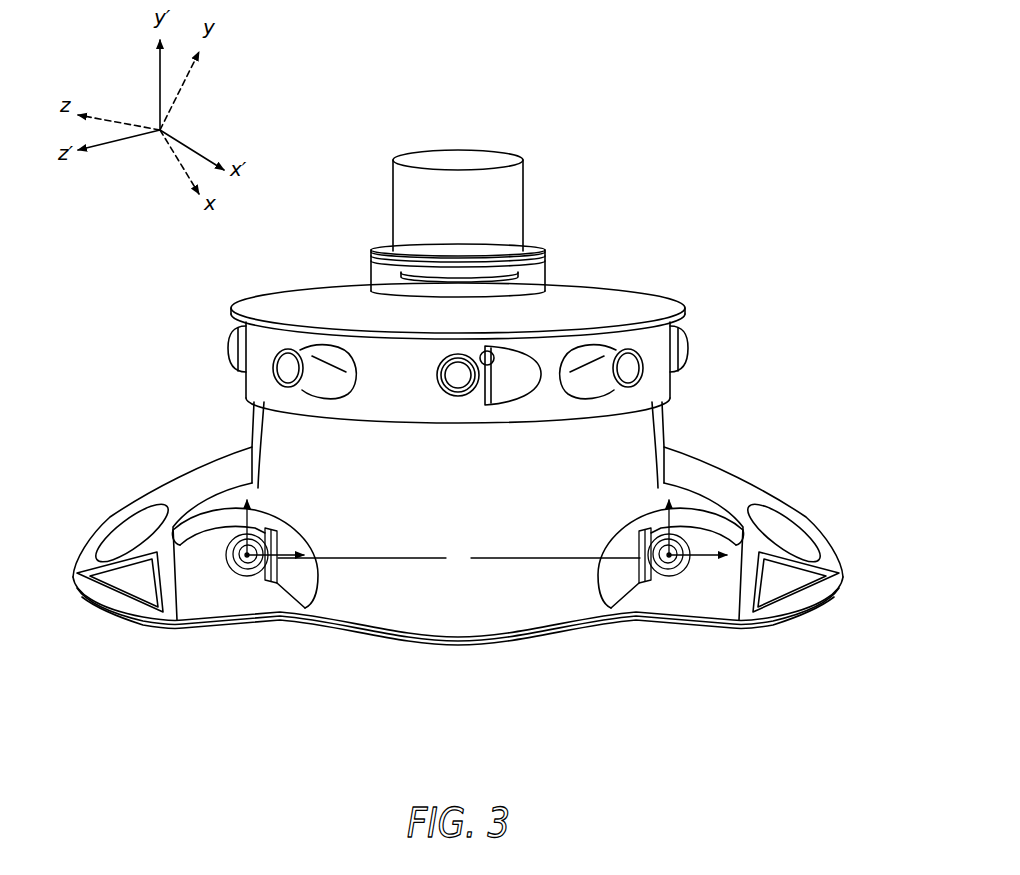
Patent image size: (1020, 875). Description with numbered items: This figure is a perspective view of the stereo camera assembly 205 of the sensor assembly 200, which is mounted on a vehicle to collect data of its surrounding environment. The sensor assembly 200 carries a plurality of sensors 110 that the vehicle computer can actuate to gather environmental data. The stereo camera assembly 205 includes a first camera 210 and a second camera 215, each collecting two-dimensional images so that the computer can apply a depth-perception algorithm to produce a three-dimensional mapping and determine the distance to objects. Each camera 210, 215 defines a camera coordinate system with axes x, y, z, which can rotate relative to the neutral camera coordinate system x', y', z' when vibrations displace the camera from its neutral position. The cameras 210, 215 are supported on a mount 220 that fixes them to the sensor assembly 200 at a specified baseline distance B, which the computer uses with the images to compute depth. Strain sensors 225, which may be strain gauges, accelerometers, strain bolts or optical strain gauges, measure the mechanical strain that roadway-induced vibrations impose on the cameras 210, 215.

The sensors 110 is at (523, 183).
The sensor assembly 200 is at (688, 140).
The stereo camera assembly 205 is at (487, 585).
The first camera 210 is at (247, 577).
The second camera 215 is at (669, 577).
The mount 220 is at (773, 503).
The strain sensors 225 is at (273, 582).